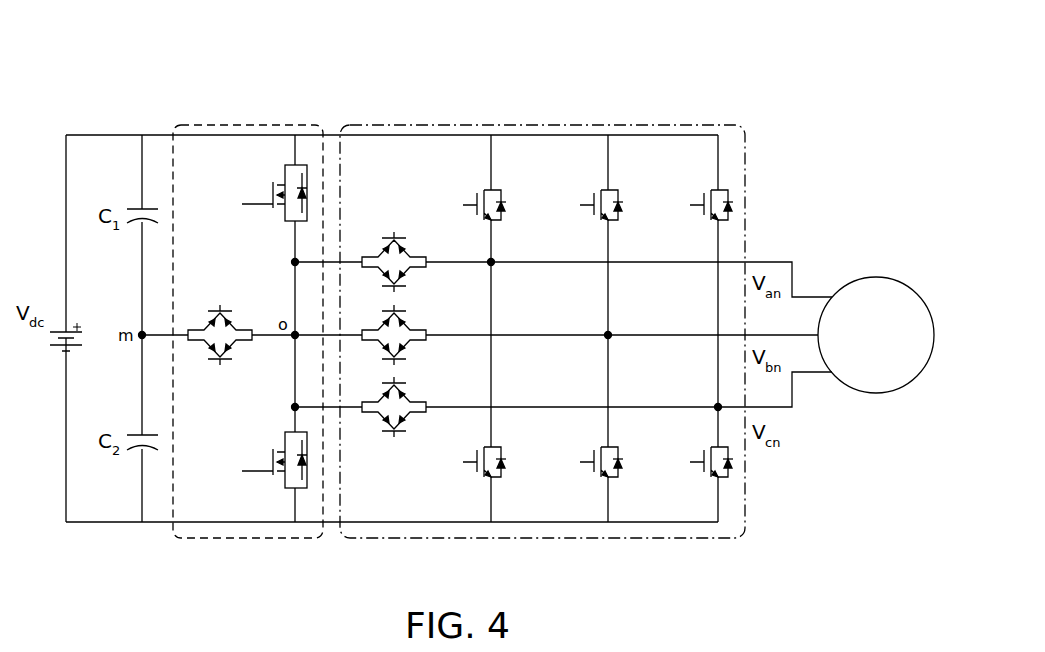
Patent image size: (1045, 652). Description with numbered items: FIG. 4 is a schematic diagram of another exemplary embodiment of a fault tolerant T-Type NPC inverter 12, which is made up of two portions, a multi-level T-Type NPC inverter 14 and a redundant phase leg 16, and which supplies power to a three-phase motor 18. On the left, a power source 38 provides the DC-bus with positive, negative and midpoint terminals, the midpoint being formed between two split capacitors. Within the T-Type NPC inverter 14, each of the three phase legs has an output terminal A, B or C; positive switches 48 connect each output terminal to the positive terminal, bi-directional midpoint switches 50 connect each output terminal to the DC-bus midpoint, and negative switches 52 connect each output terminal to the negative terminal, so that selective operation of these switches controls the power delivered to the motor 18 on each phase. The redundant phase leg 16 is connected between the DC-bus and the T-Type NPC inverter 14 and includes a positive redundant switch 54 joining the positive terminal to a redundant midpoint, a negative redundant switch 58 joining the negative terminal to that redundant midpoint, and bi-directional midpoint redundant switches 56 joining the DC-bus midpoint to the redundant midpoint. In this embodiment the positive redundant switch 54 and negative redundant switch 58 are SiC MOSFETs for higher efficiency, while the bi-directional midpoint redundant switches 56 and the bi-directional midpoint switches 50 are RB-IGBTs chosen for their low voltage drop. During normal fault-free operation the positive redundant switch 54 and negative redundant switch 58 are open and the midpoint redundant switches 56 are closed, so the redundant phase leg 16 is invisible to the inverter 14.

The fault tolerant inverter 12 is at (545, 79).
The T-Type NPC inverter 14 is at (672, 125).
The redundant phase leg 16 is at (255, 125).
The 3-phase motor 18 is at (877, 277).
The power source 38 is at (62, 330).
The positive switches 48 is at (518, 188).
The bi-directional midpoint switches 50 is at (424, 279).
The negative switches 52 is at (476, 486).
The positive redundant switch 54 is at (318, 174).
The bi-directional midpoint redundant switches 56 is at (250, 322).
The negative redundant switch 58 is at (276, 436).